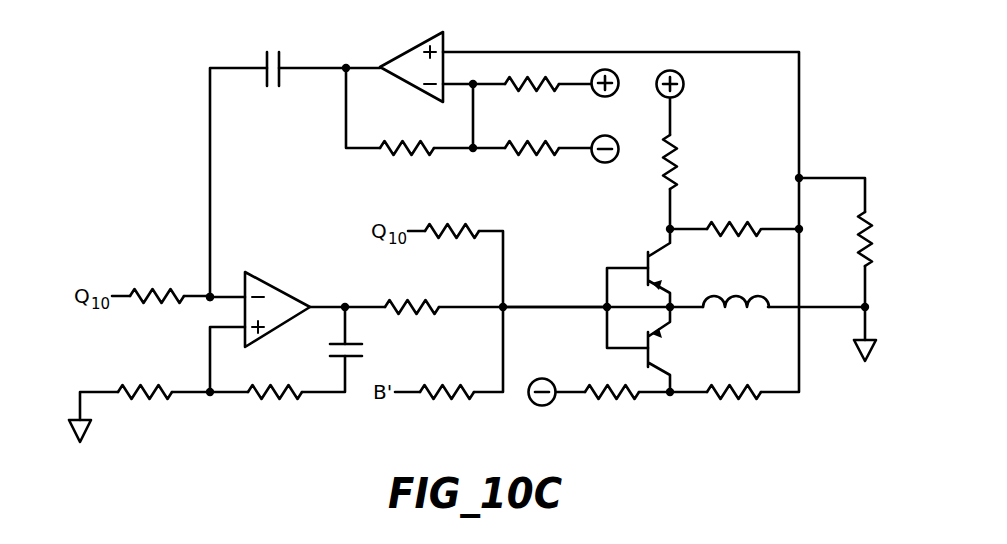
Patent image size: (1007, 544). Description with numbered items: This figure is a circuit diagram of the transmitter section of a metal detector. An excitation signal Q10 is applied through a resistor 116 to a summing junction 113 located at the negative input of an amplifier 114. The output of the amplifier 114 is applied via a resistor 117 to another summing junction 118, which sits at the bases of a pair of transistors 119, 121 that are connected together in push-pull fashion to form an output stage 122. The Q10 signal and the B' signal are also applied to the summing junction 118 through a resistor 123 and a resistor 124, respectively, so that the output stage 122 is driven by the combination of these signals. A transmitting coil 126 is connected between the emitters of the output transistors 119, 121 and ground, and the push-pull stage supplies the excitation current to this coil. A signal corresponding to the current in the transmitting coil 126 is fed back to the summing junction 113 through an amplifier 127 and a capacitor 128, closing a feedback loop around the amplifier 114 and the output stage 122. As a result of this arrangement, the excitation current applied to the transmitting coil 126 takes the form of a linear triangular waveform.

The summing junction 113 is at (207, 301).
The amplifier 114 is at (282, 291).
The resistor 116 is at (153, 290).
The resistor 117 is at (432, 312).
The summing junction 118 is at (558, 305).
The transistor 119 is at (660, 250).
The transistor 121 is at (665, 368).
The output stage 122 is at (767, 208).
The resistor 123 is at (447, 228).
The resistor 124 is at (432, 400).
The transmitting coil 126 is at (752, 306).
The amplifier 127 is at (445, 41).
The capacitor 128 is at (281, 88).